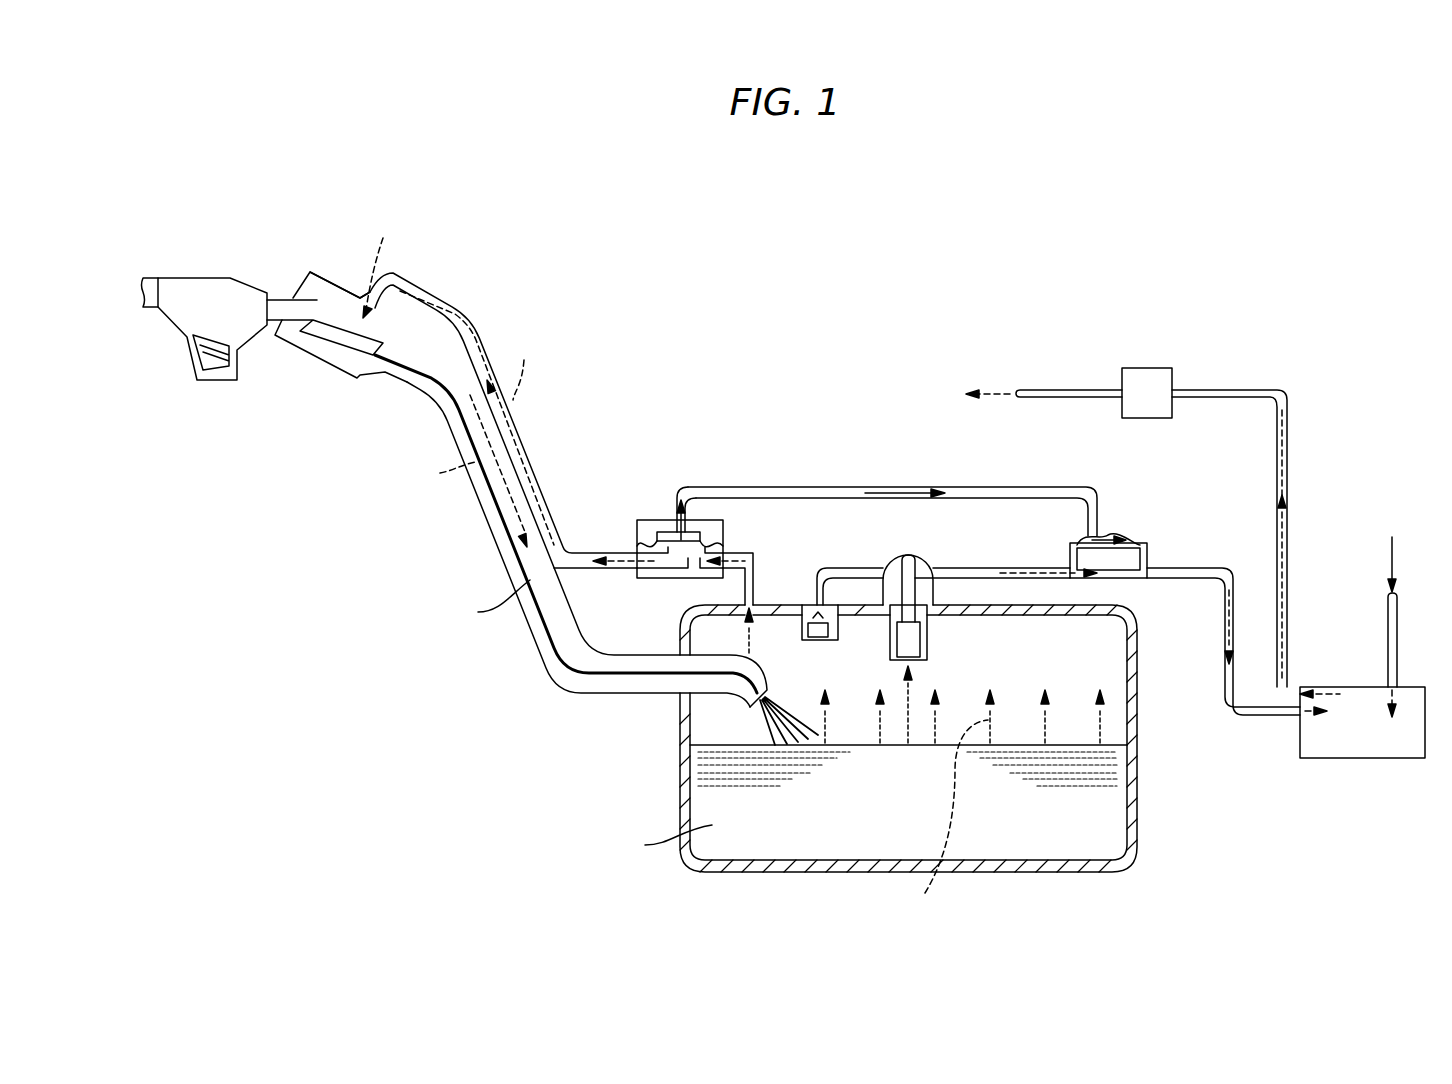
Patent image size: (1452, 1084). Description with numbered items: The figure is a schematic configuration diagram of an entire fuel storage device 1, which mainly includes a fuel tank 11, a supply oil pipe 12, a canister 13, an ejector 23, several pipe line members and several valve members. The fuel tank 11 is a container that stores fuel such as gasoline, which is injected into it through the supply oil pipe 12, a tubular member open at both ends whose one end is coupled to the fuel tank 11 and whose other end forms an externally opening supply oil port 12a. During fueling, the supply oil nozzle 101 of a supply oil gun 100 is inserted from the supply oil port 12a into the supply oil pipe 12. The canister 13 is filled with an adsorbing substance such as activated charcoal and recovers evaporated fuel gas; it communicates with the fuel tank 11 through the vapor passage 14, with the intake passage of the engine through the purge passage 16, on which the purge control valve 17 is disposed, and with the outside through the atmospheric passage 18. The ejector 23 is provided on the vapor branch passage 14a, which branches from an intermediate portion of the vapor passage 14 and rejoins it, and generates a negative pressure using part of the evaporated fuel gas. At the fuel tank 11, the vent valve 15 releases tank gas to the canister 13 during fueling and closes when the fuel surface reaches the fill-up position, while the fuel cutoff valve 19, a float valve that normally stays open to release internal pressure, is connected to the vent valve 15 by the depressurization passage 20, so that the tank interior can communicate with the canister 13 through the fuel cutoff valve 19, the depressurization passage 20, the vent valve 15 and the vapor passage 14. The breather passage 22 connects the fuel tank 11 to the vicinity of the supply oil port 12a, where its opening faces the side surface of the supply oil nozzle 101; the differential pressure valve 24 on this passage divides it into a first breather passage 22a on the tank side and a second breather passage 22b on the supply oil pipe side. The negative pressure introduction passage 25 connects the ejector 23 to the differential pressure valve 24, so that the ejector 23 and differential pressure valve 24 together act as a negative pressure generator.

The fuel storage device 1 is at (722, 270).
The fuel tank 11 is at (680, 763).
The supply oil pipe 12 is at (478, 508).
The supply oil port 12a is at (305, 285).
The canister 13 is at (1367, 758).
The vapor passage 14 is at (970, 568).
The vapor branch passage 14a is at (1068, 550).
The vent valve 15 is at (900, 550).
The purge passage 16 is at (1057, 390).
The purge control valve 17 is at (1150, 368).
The atmospheric passage 18 is at (1388, 633).
The fuel cutoff valve 19 is at (810, 603).
The depressurization passage 20 is at (820, 568).
The breather passage 22 is at (680, 397).
The first breather passage 22a is at (750, 565).
The second breather passage 22b is at (528, 438).
The ejector 23 is at (1098, 535).
The differential pressure valve 24 is at (647, 520).
The negative pressure introduction passage 25 is at (800, 490).
The supply oil gun 100 is at (208, 297).
The supply oil nozzle 101 is at (343, 327).